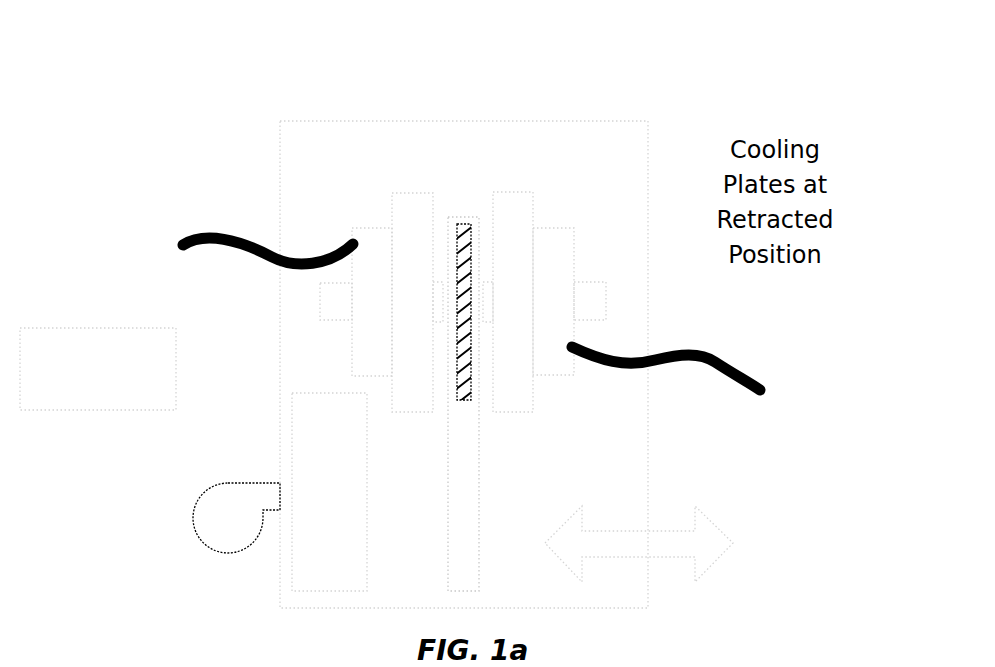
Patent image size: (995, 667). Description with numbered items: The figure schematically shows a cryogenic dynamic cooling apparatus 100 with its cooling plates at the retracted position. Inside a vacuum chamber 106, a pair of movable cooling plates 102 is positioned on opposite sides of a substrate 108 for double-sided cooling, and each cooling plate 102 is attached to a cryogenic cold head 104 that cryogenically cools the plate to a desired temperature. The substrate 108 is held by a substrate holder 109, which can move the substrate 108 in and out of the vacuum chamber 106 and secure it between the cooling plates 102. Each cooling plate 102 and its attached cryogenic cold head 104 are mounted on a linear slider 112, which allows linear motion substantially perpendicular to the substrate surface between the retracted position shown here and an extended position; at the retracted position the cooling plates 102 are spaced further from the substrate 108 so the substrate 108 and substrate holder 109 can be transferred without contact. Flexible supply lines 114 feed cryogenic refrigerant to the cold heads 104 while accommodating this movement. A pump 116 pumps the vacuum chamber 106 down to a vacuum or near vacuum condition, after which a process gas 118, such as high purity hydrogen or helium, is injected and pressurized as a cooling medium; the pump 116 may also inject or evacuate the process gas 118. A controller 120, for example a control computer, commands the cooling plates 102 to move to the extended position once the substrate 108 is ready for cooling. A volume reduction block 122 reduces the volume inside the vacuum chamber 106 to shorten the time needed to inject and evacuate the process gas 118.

The cooling apparatus 100 is at (263, 86).
The cooling plates 102 is at (413, 193).
The cryogenic cold head 104 is at (366, 229).
The vacuum chamber 106 is at (527, 121).
The substrate 108 is at (463, 401).
The substrate holder 109 is at (448, 520).
The linear slider 112 is at (320, 298).
The flexible supply lines 114 is at (210, 233).
The pump 116 is at (230, 483).
The process gas 118 is at (767, 520).
The controller 120 is at (130, 328).
The volume reduction block 122 is at (329, 492).